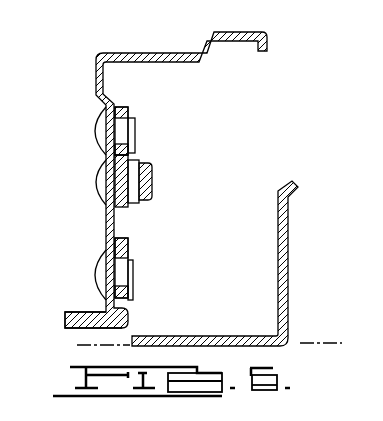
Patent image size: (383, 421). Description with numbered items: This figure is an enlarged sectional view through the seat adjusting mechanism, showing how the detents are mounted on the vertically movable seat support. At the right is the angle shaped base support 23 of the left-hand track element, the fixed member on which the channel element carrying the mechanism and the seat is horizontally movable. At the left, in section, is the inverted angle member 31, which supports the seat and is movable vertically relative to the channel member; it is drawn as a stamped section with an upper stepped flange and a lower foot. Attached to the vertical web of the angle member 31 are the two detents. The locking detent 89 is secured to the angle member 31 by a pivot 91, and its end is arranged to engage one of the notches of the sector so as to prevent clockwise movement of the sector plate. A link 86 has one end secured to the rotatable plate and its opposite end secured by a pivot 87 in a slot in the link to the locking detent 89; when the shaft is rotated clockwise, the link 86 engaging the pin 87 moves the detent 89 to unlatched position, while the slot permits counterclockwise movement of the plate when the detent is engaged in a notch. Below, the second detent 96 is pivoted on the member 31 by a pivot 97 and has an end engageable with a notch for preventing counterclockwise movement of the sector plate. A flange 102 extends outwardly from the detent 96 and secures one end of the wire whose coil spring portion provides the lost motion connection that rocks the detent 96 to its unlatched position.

The angle shaped base support 23 is at (280, 275).
The inverted angle member 31 is at (181, 62).
The link 86 is at (152, 202).
The pivot 87 is at (148, 177).
The locking detent 89 is at (128, 110).
The pivot 91 is at (125, 135).
The second detent 96 is at (127, 242).
The pivot 97 is at (130, 277).
The flange 102 is at (80, 312).